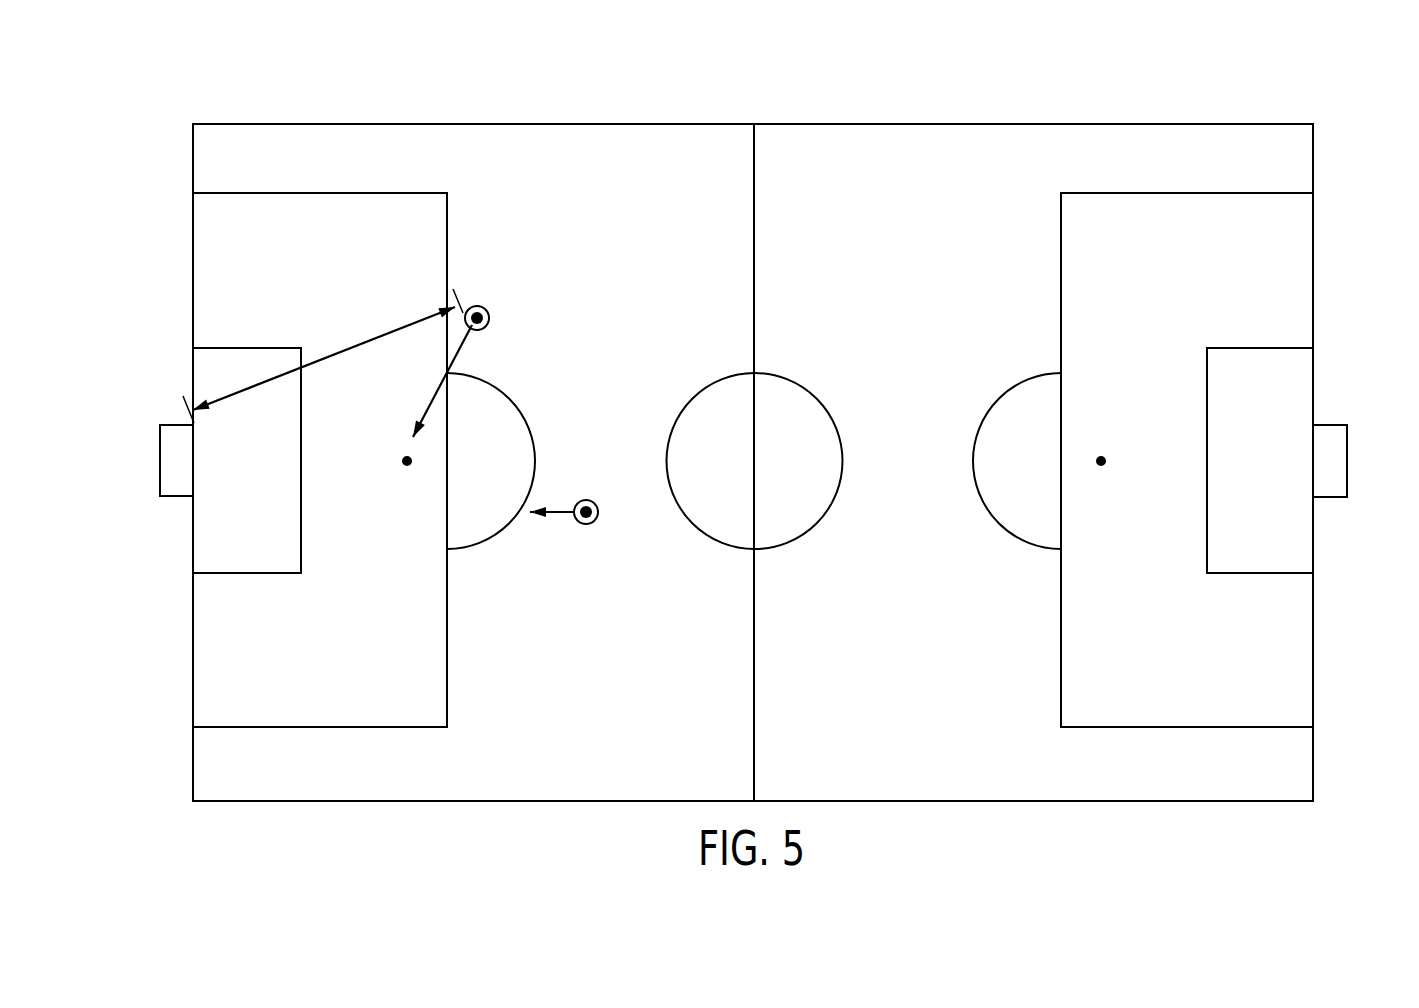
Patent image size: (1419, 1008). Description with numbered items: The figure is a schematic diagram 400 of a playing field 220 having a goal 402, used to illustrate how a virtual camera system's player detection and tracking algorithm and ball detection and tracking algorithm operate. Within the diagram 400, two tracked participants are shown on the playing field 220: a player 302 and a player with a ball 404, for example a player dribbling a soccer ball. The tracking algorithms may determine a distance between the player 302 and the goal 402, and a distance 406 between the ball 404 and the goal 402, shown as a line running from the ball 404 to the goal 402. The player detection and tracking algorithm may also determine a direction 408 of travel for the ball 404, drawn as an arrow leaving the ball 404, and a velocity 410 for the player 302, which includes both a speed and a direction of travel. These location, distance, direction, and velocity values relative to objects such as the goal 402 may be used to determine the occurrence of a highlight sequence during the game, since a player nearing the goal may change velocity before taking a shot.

The schematic diagram 400 is at (160, 84).
The playing field 220 is at (1313, 662).
The goal 402 is at (160, 460).
The player with a ball 404 is at (487, 307).
The distance 406 is at (322, 355).
The direction of travel 408 is at (435, 398).
The player 302 is at (595, 500).
The velocity 410 is at (563, 515).